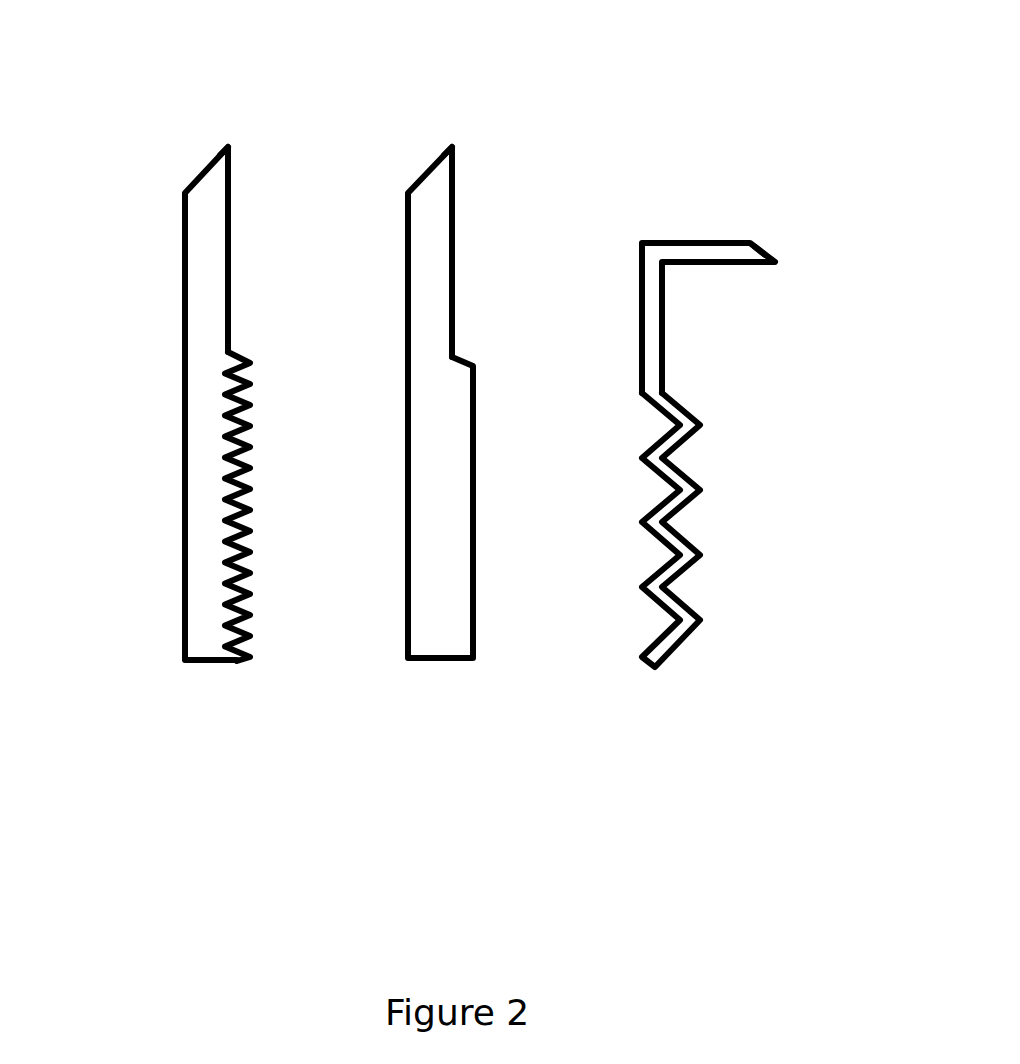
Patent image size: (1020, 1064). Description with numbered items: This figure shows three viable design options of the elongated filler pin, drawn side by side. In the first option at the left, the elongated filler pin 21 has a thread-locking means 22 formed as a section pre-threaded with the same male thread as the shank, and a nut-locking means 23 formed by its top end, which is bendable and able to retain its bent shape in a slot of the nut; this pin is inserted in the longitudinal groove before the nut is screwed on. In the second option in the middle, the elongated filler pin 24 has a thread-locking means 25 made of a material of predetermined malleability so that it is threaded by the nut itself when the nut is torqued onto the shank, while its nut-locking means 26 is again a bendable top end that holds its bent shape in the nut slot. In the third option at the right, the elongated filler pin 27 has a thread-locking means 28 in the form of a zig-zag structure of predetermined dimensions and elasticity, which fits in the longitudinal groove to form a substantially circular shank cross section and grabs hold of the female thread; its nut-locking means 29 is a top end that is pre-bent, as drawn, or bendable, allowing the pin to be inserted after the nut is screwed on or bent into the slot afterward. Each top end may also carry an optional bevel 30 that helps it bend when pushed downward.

The elongated filler pin 21 is at (211, 458).
The thread-locking means 22 is at (242, 360).
The nut-locking means 23 is at (200, 250).
The elongated filler pin 24 is at (434, 444).
The thread-locking means 25 is at (458, 377).
The nut-locking means 26 is at (423, 253).
The elongated filler pin 27 is at (636, 441).
The thread-locking means 28 is at (655, 582).
The nut-locking means 29 is at (698, 253).
The bevel 30 is at (757, 238).